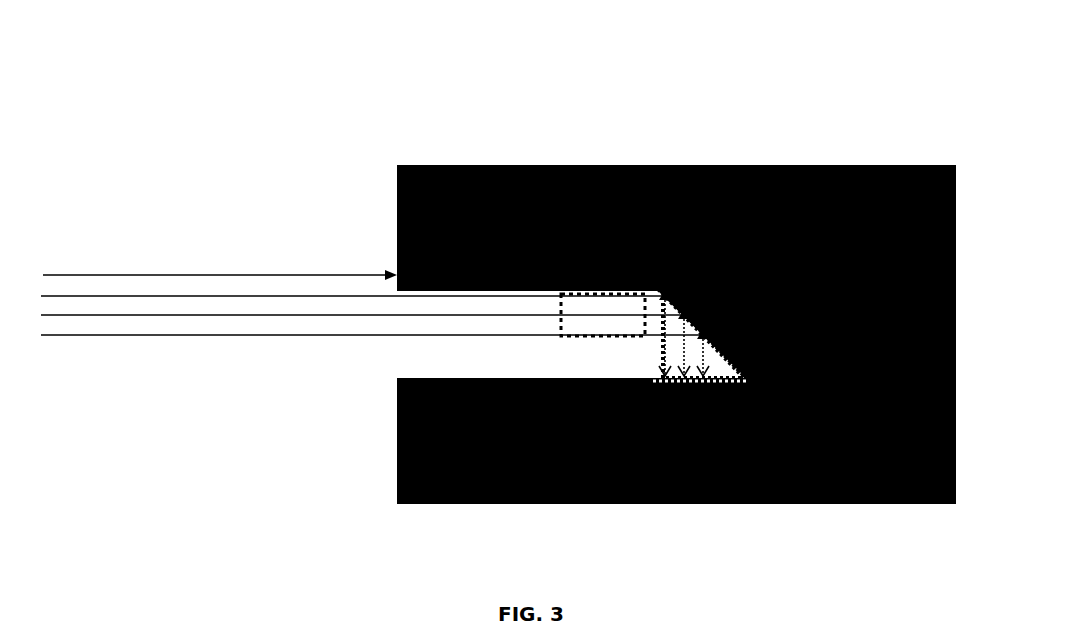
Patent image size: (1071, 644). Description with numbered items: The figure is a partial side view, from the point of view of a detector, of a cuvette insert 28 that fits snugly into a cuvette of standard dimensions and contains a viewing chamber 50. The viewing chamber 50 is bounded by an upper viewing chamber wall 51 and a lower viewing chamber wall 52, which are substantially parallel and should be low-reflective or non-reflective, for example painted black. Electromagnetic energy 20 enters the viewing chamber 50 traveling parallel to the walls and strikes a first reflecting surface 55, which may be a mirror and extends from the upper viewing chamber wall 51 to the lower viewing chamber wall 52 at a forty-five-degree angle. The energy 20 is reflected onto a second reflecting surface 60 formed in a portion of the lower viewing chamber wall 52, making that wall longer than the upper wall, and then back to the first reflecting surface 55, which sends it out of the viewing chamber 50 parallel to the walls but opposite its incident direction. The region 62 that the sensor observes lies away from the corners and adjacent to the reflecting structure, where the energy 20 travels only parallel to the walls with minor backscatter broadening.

The cuvette insert 28 is at (532, 157).
The viewing chamber 50 is at (571, 334).
The upper viewing chamber wall 51 is at (468, 283).
The lower viewing chamber wall 52 is at (492, 370).
The electromagnetic energy 20 is at (183, 320).
The first reflecting surface 55 is at (697, 323).
The second reflecting surface 60 is at (697, 373).
The region 62 is at (603, 315).